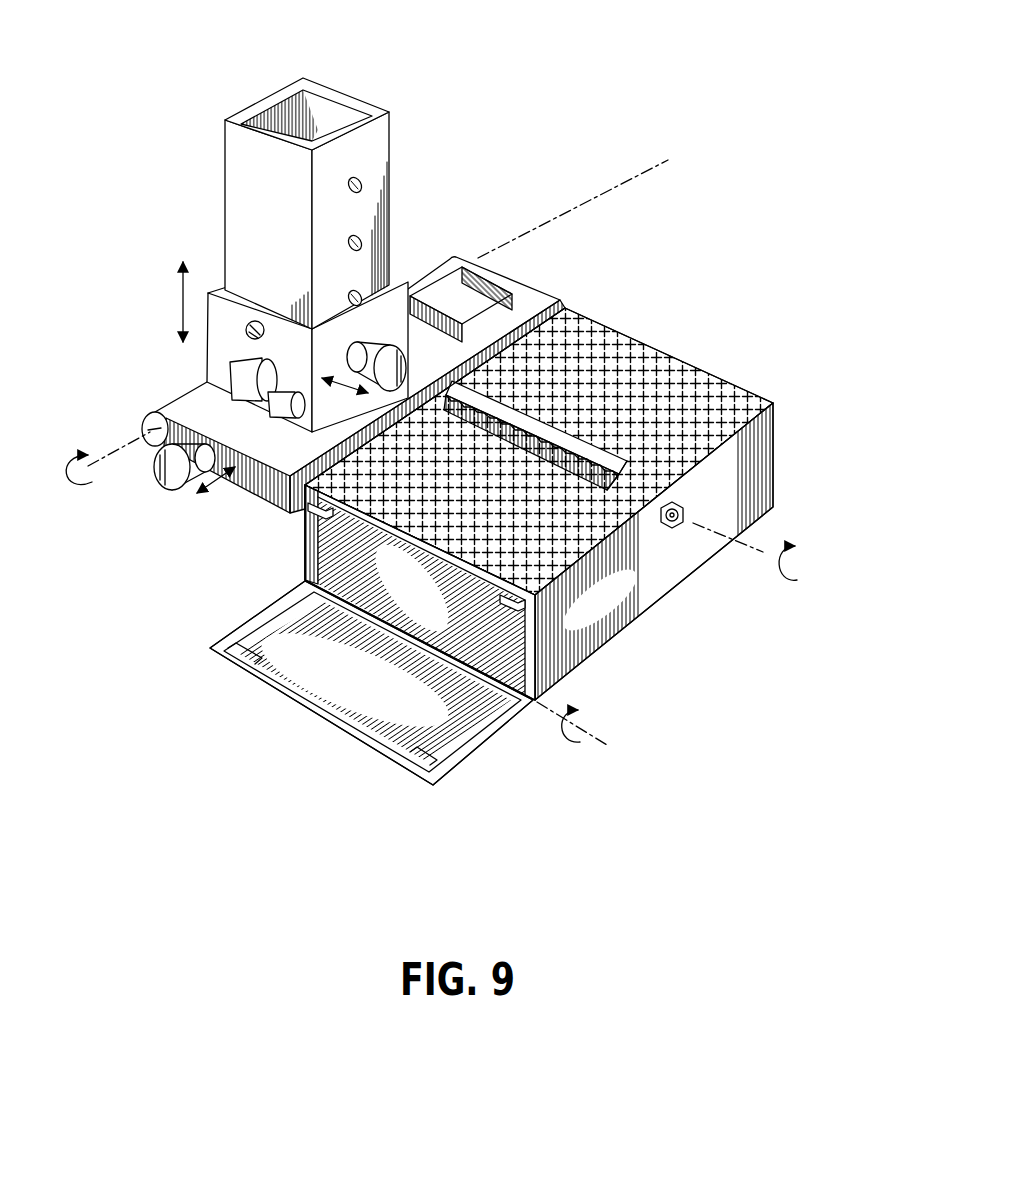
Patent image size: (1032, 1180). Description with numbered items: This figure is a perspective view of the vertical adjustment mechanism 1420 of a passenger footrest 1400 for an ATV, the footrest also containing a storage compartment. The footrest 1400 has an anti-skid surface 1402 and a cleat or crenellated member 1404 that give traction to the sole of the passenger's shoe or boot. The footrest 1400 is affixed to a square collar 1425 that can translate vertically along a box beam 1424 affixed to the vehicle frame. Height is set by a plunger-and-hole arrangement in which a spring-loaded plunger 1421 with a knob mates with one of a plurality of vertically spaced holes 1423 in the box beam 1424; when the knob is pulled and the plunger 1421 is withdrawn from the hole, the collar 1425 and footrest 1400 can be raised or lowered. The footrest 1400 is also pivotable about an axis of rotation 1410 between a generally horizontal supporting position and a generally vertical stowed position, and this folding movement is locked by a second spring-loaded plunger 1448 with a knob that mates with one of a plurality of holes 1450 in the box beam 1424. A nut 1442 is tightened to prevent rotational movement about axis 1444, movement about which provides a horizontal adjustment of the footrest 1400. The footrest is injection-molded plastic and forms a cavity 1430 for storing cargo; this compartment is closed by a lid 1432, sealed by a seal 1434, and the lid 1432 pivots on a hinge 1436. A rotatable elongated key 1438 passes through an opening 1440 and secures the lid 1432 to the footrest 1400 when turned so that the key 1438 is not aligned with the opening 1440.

The passenger footrest 1400 is at (683, 395).
The anti-skid surface 1402 is at (572, 542).
The cleat or crenellated member 1404 is at (538, 417).
The axis of rotation 1410 is at (632, 185).
The adjustment mechanism 1420 is at (411, 168).
The spring-loaded plunger 1421 is at (370, 338).
The vertically spaced holes 1423 is at (360, 182).
The box beam 1424 is at (262, 104).
The square collar 1425 is at (208, 315).
The cavity 1430 is at (319, 709).
The lid 1432 is at (386, 697).
The seal 1434 is at (273, 673).
The hinge 1436 is at (557, 698).
The rotatable elongated key 1438 is at (305, 513).
The opening 1440 is at (222, 647).
The nut 1442 is at (685, 505).
The axis 1444 is at (765, 552).
The spring-loaded plunger 1448 is at (192, 500).
The holes 1450 is at (256, 322).